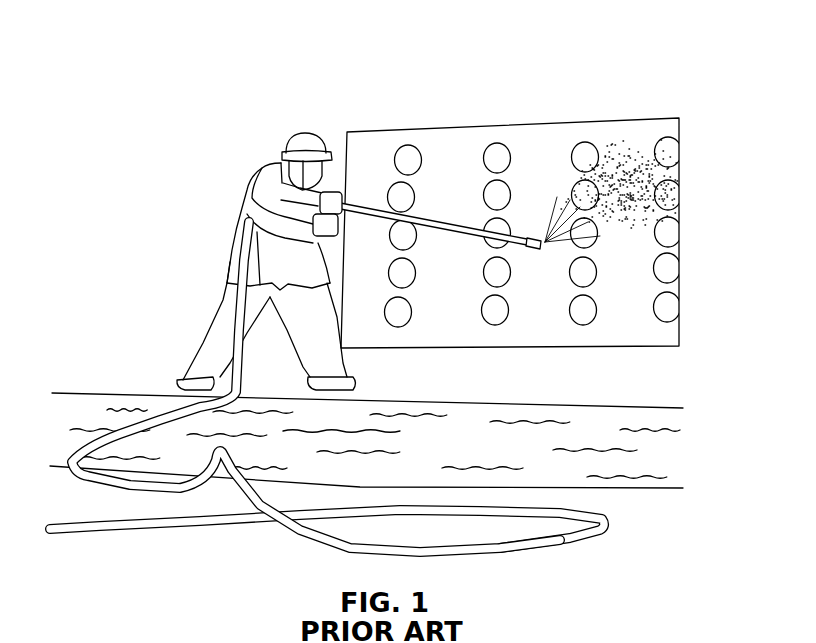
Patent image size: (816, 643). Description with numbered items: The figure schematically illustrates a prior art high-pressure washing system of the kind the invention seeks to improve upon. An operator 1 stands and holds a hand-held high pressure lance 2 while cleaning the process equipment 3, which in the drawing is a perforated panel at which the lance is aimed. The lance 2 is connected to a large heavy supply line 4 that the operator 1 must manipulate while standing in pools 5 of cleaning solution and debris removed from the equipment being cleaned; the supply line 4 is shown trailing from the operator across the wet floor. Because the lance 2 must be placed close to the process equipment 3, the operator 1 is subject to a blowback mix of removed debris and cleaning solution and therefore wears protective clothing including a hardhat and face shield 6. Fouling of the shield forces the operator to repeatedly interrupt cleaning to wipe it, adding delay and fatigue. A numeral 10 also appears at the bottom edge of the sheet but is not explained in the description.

The operator / worker 1 is at (228, 204).
The lance (spray wand) 2 is at (452, 221).
The high-pressure water spray 3 is at (654, 183).
The hose 4 is at (228, 331).
The floor / deck 5 is at (655, 451).
The protective helmet 6 is at (300, 124).
The cleaning system 10 is at (215, 642).